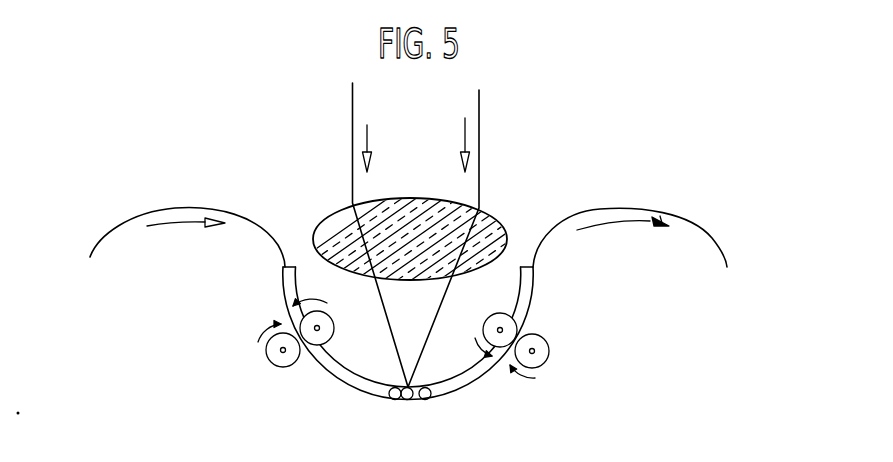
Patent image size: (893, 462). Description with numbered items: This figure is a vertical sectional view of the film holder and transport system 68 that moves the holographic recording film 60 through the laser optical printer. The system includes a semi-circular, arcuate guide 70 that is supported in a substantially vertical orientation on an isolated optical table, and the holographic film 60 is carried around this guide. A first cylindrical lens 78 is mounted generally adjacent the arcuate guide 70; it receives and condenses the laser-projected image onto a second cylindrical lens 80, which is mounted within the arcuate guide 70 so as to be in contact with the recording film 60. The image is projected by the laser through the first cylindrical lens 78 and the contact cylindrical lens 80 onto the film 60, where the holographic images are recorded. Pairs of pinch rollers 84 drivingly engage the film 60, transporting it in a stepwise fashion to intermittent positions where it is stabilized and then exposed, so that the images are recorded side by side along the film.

The holographic recording film 60 is at (259, 228).
The film holder and transport system 68 is at (559, 158).
The arcuate guide 70 is at (360, 388).
The first cylindrical lens 78 is at (497, 223).
The second cylindrical lens 80 is at (425, 400).
The pinch rollers 84 is at (277, 367).